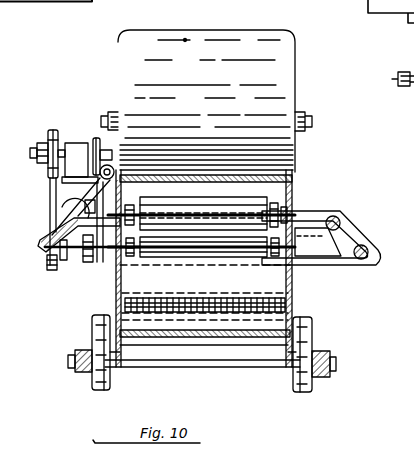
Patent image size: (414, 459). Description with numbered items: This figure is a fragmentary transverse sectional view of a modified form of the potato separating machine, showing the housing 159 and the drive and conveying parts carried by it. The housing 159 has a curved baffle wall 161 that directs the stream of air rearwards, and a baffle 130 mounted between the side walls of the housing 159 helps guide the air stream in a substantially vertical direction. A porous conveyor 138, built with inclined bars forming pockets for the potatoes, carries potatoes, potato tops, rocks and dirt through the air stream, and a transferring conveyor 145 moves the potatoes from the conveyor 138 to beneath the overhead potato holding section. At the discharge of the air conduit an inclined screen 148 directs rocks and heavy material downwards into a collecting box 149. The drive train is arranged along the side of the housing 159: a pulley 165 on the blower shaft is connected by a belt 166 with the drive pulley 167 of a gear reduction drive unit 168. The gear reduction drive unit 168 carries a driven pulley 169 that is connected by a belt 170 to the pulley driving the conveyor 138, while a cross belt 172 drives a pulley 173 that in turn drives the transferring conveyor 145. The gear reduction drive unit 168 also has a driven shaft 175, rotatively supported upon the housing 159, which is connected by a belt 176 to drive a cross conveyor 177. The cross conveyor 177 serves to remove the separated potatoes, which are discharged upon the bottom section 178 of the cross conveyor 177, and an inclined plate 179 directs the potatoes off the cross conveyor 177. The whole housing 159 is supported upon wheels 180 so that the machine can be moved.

The baffle 130 is at (132, 272).
The conveyor 138 is at (195, 228).
The transferring conveyor 145 is at (183, 240).
The inclined screen 148 is at (290, 303).
The collecting box 149 is at (168, 332).
The housing 159 is at (185, 40).
The curved baffle wall 161 is at (207, 43).
The pulley 165 is at (45, 270).
The belt 166 is at (50, 190).
The drive pulley 167 is at (50, 135).
The gear reduction drive unit 168 is at (77, 143).
The driven pulley 169 is at (97, 138).
The belt 170 is at (123, 181).
The cross belt 172 is at (88, 272).
The pulley 173 is at (85, 268).
The driven shaft 175 is at (113, 168).
The belt 176 is at (62, 205).
The cross conveyor 177 is at (368, 231).
The bottom section 178 is at (355, 264).
The inclined plate 179 is at (322, 247).
The wheels 180 is at (92, 383).